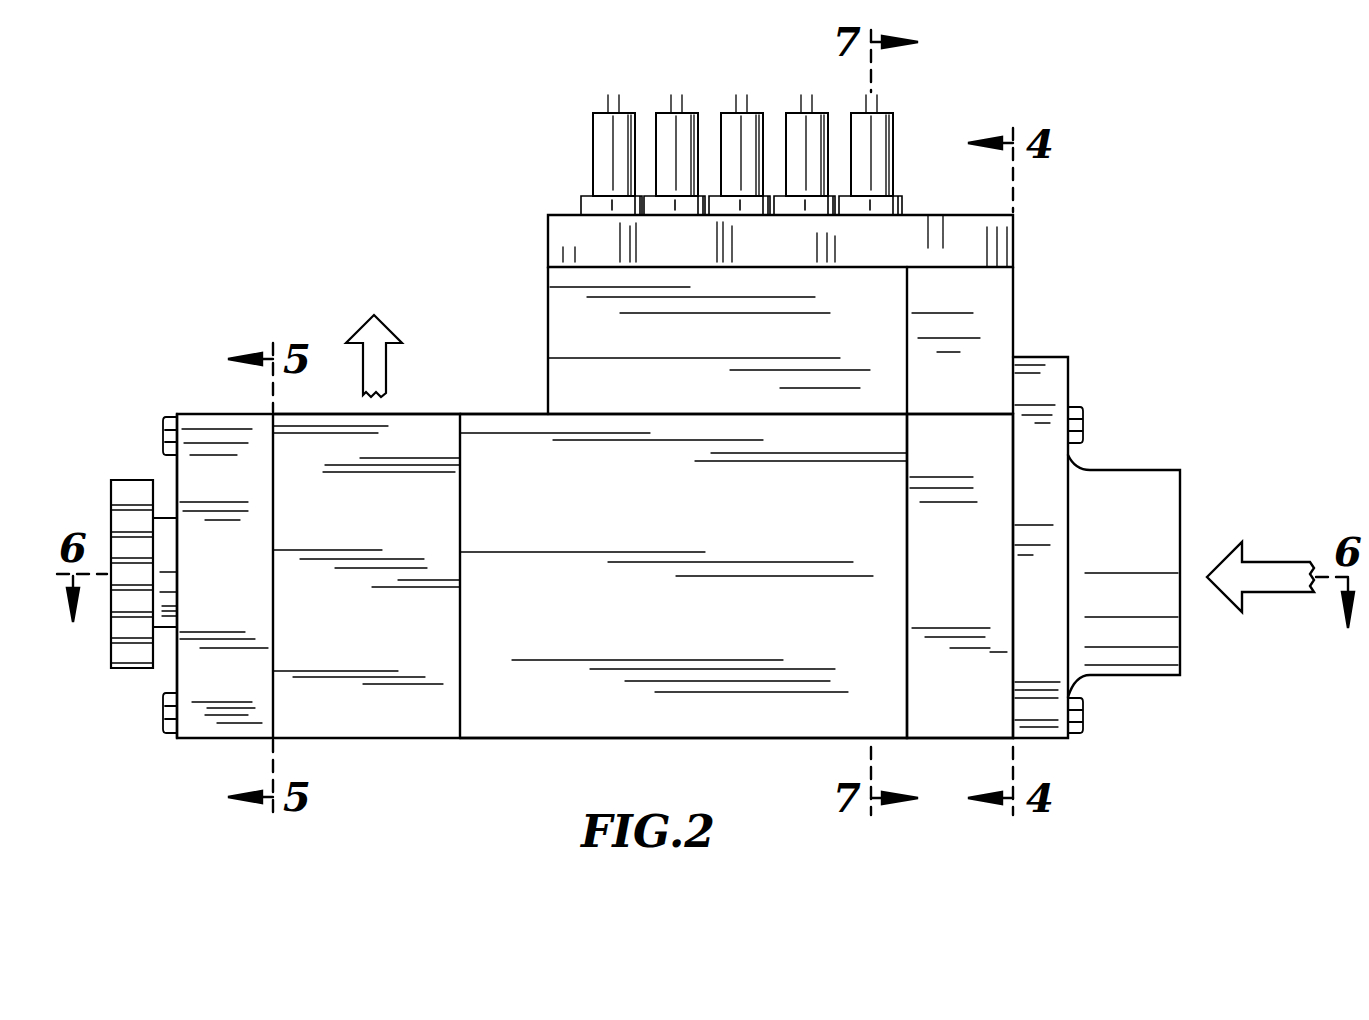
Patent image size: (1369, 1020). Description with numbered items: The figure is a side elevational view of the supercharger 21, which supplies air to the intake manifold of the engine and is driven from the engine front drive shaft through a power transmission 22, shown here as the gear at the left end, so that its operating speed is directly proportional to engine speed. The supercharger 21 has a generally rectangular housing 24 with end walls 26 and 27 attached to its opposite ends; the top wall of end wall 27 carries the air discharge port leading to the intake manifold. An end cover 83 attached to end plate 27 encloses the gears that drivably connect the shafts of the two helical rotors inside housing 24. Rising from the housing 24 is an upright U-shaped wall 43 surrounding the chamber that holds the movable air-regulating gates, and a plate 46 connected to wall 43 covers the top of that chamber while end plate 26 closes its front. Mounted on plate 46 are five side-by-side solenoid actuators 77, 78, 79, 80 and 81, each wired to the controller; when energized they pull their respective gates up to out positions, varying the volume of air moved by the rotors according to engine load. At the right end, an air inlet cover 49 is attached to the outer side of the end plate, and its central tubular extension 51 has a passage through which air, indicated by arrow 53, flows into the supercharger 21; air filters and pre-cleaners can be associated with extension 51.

The supercharger 21 is at (441, 258).
The power transmission 22 is at (131, 490).
The housing 24 is at (629, 710).
The end wall 26 is at (950, 722).
The end wall 27 is at (380, 725).
The U-shaped wall 43 is at (571, 317).
The plate 46 is at (568, 233).
The air inlet cover 49 is at (1058, 382).
The tubular extension 51 is at (1141, 660).
The arrow 53 is at (1270, 583).
The solenoid actuator 77 is at (591, 132).
The solenoid actuator 78 is at (657, 130).
The solenoid actuator 79 is at (721, 130).
The solenoid actuator 80 is at (787, 130).
The solenoid actuator 81 is at (884, 130).
The end cover 83 is at (196, 720).